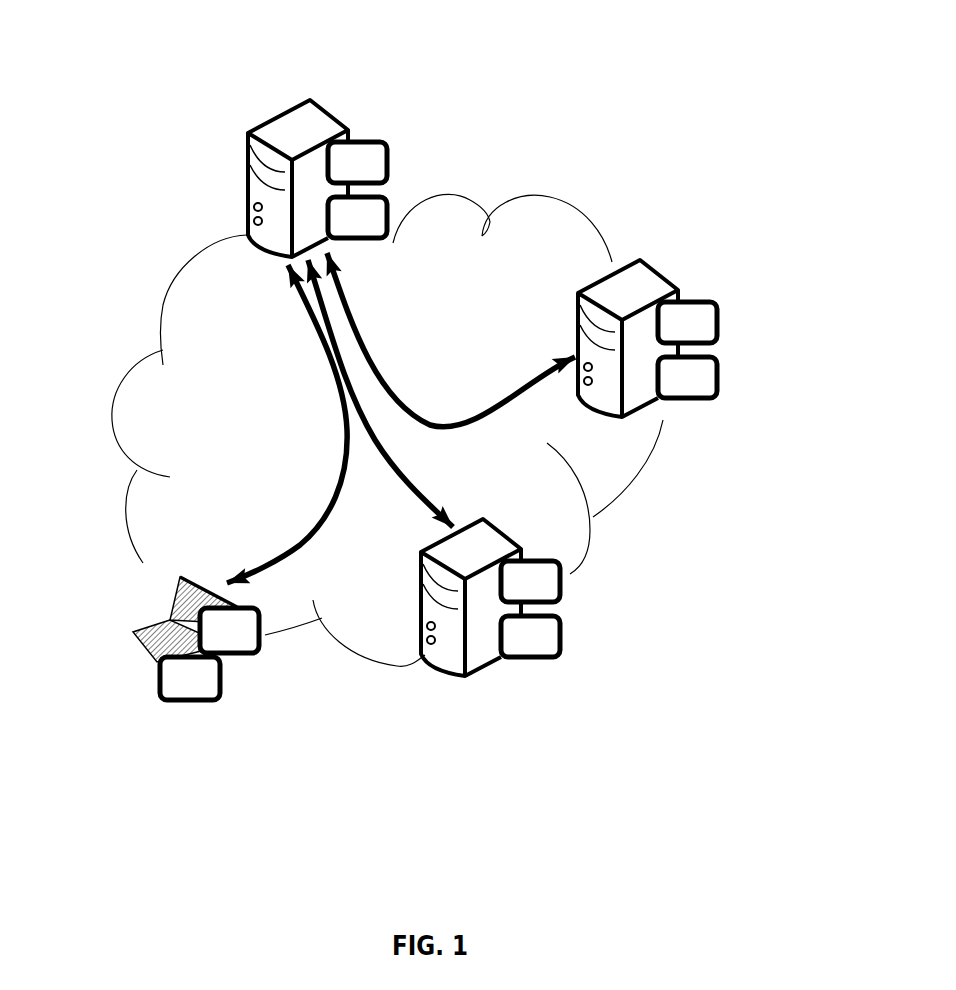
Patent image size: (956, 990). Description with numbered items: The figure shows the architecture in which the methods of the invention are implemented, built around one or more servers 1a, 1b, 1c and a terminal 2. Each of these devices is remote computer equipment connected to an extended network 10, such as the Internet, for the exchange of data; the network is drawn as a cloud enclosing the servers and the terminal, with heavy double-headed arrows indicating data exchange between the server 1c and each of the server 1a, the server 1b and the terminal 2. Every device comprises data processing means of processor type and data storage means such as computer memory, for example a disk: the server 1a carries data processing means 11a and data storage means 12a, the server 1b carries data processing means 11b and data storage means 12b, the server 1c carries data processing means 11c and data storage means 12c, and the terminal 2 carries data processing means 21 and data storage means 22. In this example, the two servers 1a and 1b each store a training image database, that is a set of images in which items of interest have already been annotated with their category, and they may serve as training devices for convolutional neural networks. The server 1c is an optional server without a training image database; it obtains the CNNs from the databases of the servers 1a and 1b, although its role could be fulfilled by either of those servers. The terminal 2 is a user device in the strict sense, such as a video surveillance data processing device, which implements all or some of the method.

The server 1a is at (639, 256).
The server 1b is at (484, 683).
The server 1c is at (311, 92).
The terminal 2 is at (134, 632).
The extended network 10 is at (167, 257).
The data processing means 11a is at (724, 382).
The data processing means 11b is at (566, 648).
The data processing means 11c is at (393, 223).
The data storage means 12a is at (724, 312).
The data storage means 12b is at (567, 571).
The data storage means 12c is at (392, 153).
The data processing means 21 is at (268, 661).
The data storage means 22 is at (219, 701).